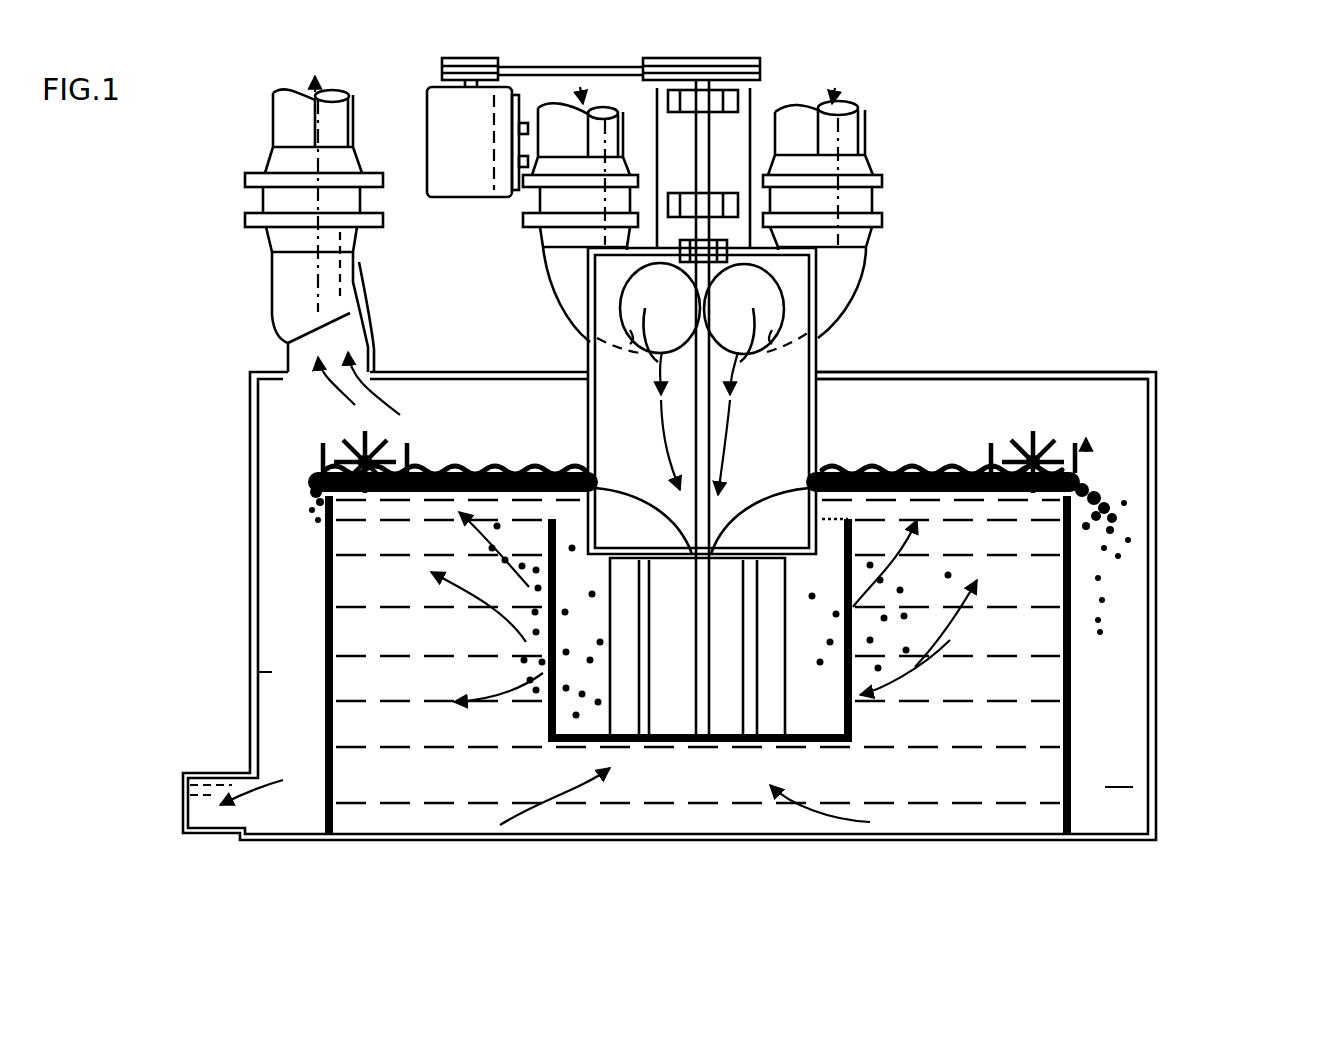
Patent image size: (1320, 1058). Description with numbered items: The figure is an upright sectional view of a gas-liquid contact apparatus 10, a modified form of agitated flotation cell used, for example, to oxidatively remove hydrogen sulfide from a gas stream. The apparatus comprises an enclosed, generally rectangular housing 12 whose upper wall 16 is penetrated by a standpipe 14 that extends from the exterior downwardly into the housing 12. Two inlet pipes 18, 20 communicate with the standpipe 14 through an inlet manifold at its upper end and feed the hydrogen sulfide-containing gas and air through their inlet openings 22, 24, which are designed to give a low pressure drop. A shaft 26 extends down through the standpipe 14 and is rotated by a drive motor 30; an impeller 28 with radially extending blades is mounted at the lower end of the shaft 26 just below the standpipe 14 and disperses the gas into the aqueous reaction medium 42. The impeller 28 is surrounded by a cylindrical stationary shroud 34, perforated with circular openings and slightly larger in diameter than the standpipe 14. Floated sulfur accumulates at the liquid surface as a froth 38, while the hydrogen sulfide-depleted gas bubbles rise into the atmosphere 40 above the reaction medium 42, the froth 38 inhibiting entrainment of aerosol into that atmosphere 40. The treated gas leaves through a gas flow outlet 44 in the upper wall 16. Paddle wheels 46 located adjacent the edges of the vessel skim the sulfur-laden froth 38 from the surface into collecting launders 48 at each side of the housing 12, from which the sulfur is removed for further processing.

The gas-liquid contact apparatus 10 is at (1228, 393).
The enclosed housing 12 is at (1151, 675).
The standpipe 14 is at (820, 422).
The upper wall 16 is at (996, 373).
The inlet pipe 18 is at (866, 260).
The inlet pipe 20 is at (552, 293).
The inlet opening 22 is at (778, 314).
The inlet opening 24 is at (590, 350).
The shaft 26 is at (720, 408).
The impeller 28 is at (682, 705).
The drive motor 30 is at (455, 178).
The cylindrical stationary shroud 34 is at (853, 568).
The froth 38 is at (492, 462).
The atmosphere 40 is at (453, 415).
The reaction medium 42 is at (414, 790).
The gas flow outlet 44 is at (265, 292).
The paddle wheels 46 is at (345, 438).
The collecting launders 48 is at (238, 690).